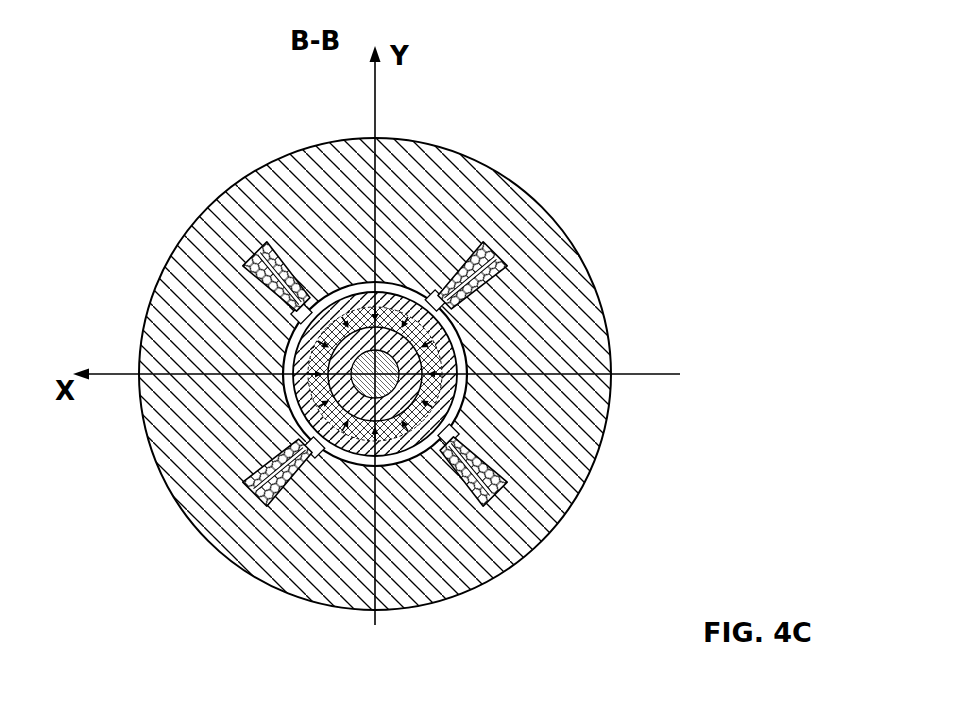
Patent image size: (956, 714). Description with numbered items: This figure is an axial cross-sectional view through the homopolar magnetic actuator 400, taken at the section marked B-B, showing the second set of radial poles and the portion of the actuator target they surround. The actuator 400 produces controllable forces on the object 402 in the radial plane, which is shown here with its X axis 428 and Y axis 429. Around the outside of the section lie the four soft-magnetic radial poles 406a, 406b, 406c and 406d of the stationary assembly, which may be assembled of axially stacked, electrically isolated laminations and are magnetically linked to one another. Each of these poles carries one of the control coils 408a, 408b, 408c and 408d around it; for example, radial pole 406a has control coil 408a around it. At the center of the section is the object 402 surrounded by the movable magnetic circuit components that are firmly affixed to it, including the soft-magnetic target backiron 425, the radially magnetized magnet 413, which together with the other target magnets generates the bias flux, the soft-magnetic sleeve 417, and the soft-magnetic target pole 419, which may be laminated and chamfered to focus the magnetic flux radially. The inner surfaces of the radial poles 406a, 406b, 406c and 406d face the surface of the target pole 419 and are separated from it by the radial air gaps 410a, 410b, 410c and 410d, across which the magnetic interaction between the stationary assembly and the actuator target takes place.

The magnetic actuator 400 is at (147, 43).
The object 402 is at (453, 417).
The radial pole 406a is at (412, 168).
The radial pole 406b is at (177, 323).
The radial pole 406c is at (355, 572).
The radial pole 406d is at (547, 273).
The control coil 408a is at (264, 272).
The control coil 408b is at (265, 288).
The control coil 408c is at (300, 437).
The control coil 408d is at (502, 258).
The radial air gap 410a is at (343, 283).
The radial air gap 410b is at (297, 437).
The radial air gap 410c is at (395, 467).
The radial air gap 410d is at (460, 342).
The radially magnetized magnet 413 is at (393, 303).
The soft-magnetic sleeve 417 is at (473, 370).
The soft-magnetic target pole 419 is at (385, 383).
The soft-magnetic target backiron 425 is at (295, 415).
The X axis 428 is at (108, 370).
The Y axis 429 is at (373, 90).